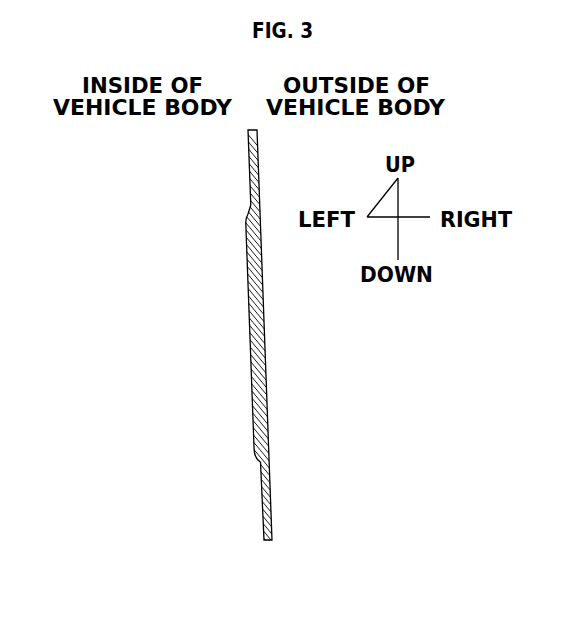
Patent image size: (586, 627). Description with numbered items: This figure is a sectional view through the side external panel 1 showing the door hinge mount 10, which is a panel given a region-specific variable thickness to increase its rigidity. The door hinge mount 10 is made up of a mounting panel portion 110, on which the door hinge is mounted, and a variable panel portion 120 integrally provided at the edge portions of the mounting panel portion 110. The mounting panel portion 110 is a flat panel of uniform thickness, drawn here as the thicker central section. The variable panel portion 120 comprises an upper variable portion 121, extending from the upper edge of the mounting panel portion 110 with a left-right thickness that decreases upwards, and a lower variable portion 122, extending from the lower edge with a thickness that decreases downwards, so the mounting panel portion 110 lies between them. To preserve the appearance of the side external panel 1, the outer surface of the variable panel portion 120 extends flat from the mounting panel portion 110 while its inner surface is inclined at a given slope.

The side external panel 1 is at (213, 164).
The door hinge mount 10 is at (241, 284).
The mounting panel portion 110 is at (248, 310).
The variable panel portion 120 is at (184, 334).
The upper variable portion 121 is at (248, 213).
The lower variable portion 122 is at (258, 448).